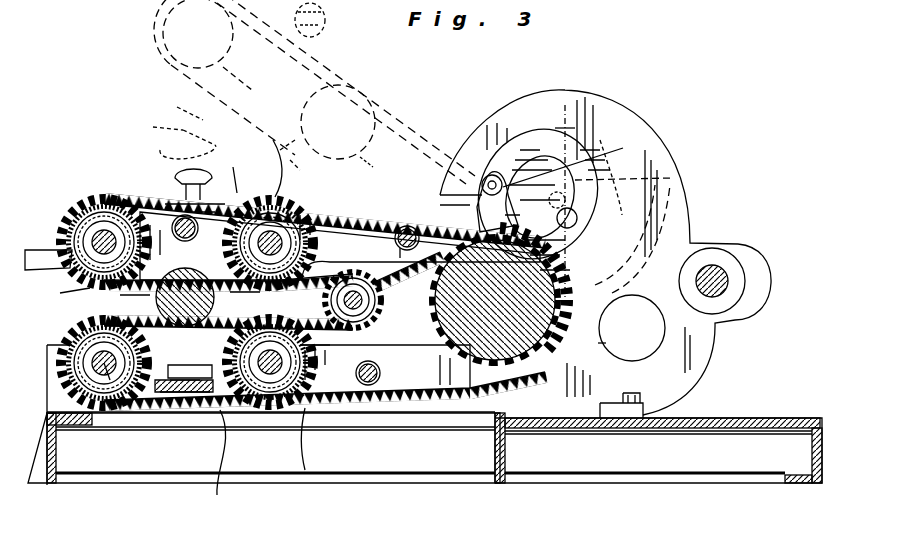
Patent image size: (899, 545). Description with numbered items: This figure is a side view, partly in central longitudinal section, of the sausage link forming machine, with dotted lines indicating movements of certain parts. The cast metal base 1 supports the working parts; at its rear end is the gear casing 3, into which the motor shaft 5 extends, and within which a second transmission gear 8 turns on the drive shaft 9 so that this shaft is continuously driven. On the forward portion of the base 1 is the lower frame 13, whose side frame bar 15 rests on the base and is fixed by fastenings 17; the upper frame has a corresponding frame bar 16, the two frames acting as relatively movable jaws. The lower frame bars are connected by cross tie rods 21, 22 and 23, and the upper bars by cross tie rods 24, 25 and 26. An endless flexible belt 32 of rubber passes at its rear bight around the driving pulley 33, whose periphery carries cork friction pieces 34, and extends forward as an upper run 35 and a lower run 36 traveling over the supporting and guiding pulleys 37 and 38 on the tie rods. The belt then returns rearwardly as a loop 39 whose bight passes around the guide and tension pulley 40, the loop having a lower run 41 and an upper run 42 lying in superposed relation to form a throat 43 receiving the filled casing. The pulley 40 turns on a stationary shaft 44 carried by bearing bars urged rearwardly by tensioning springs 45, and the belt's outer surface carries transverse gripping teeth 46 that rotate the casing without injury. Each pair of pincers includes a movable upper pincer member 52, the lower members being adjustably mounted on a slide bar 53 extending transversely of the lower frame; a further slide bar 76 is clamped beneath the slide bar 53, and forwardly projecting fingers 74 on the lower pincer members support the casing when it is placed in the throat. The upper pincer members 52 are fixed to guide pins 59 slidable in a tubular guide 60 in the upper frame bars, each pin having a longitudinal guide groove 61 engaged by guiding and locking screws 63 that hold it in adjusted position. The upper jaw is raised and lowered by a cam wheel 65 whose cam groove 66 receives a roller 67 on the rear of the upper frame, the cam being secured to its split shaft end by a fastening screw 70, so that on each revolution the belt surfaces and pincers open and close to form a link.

The base 1 is at (47, 430).
The gear casing 3 is at (692, 145).
The shaft 5 is at (718, 268).
The second transmission gear 8 is at (565, 128).
The drive shaft 9 is at (190, 361).
The lower frame 13 is at (72, 415).
The frame bar 15 is at (350, 196).
The frame bar 16 is at (450, 107).
The fastenings 17 is at (485, 430).
The cross tie rod 21 is at (104, 363).
The cross tie rod 22 is at (265, 400).
The cross tie rod 23 is at (355, 403).
The cross tie rod 24 is at (104, 242).
The cross tie rod 25 is at (300, 242).
The cross tie rod 26 is at (395, 238).
The endless flexible belt 32 is at (387, 103).
The driving pulley 33 is at (605, 322).
The friction pieces 34 is at (619, 343).
The upper run 35 is at (345, 206).
The lower run 36 is at (398, 403).
The supporting and guiding pulleys 37 is at (115, 400).
The supporting and guiding pulleys 38 is at (230, 52).
The loop 39 is at (194, 362).
The guide and tension pulley 40 is at (372, 285).
The lower run 41 is at (65, 328).
The upper run 42 is at (65, 304).
The throat 43 is at (115, 300).
The stationary shaft 44 is at (340, 340).
The tensioning springs 45 is at (436, 280).
The gripping teeth 46 is at (380, 155).
The upper pincer member 52 is at (174, 103).
The slide bar 53 is at (175, 392).
The guide pins 59 is at (173, 227).
The tubular guide 60 is at (200, 225).
The guide groove 61 is at (170, 129).
The guiding and locking screws 63 is at (175, 178).
The cam wheel 65 is at (606, 178).
The cam groove 66 is at (672, 162).
The roller 67 is at (480, 176).
The fastening screw 70 is at (578, 217).
The fingers 74 is at (42, 270).
The slide bar 76 is at (205, 393).